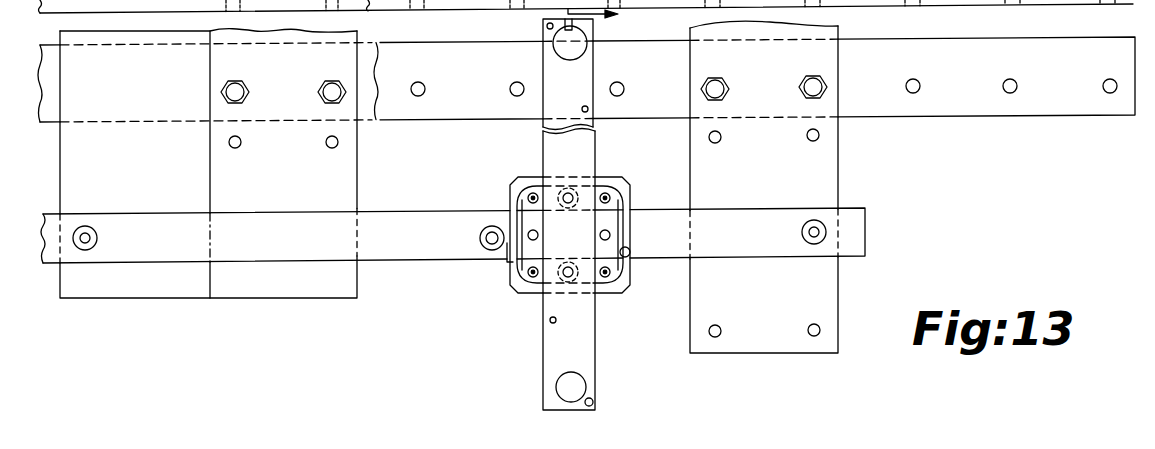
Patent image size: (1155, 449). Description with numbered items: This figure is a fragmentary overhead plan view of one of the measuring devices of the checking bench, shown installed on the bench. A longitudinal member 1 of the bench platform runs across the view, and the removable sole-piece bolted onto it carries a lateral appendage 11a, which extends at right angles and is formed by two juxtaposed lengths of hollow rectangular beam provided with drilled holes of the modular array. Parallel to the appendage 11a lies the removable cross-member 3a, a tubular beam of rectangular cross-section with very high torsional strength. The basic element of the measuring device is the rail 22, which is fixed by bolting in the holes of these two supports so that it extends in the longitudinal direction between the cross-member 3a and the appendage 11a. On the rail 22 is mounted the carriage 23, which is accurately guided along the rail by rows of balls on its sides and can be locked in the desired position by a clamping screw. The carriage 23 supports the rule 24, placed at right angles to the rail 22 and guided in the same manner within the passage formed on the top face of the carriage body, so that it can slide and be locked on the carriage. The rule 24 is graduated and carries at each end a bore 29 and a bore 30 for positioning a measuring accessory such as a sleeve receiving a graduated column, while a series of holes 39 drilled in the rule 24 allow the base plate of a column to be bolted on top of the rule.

The longitudinal member 1 is at (443, 107).
The appendage 11a is at (345, 163).
The removable cross-member 3a is at (825, 183).
The rail 22 is at (470, 247).
The carriage 23 is at (622, 182).
The rule 24 is at (557, 348).
The bore 29 is at (580, 58).
The bore 30 is at (586, 373).
The holes 39 is at (588, 108).